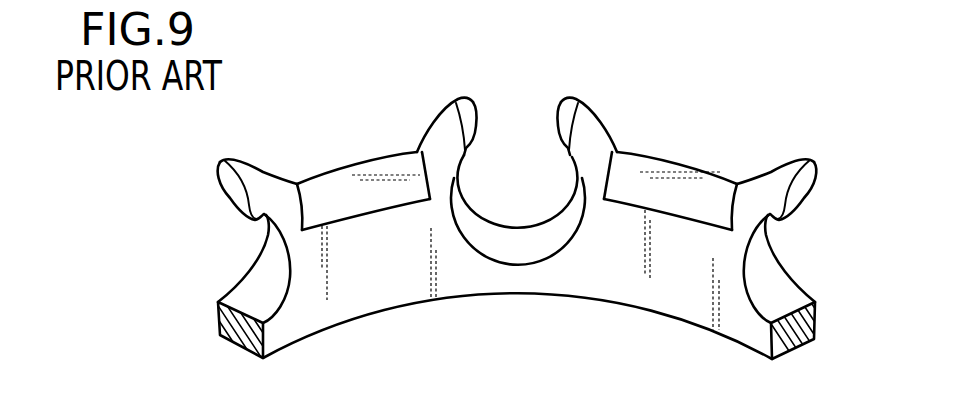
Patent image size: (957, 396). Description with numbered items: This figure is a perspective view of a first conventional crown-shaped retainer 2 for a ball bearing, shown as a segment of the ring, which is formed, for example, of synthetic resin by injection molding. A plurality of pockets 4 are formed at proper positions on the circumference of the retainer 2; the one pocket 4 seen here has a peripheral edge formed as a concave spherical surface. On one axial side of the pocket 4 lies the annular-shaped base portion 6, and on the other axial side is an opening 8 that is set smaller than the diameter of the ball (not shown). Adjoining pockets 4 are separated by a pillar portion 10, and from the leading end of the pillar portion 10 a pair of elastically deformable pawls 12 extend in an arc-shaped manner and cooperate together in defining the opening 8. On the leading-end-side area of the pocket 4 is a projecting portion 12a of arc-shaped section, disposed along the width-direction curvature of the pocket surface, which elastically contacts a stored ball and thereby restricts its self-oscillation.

The retainer 2 is at (330, 149).
The pocket 4 is at (547, 243).
The annular-shaped base portion 6 is at (467, 281).
The opening 8 is at (519, 140).
The pillar portion 10 is at (688, 237).
The elastically deformable pawl 12 is at (440, 133).
The projecting portion 12a is at (472, 153).